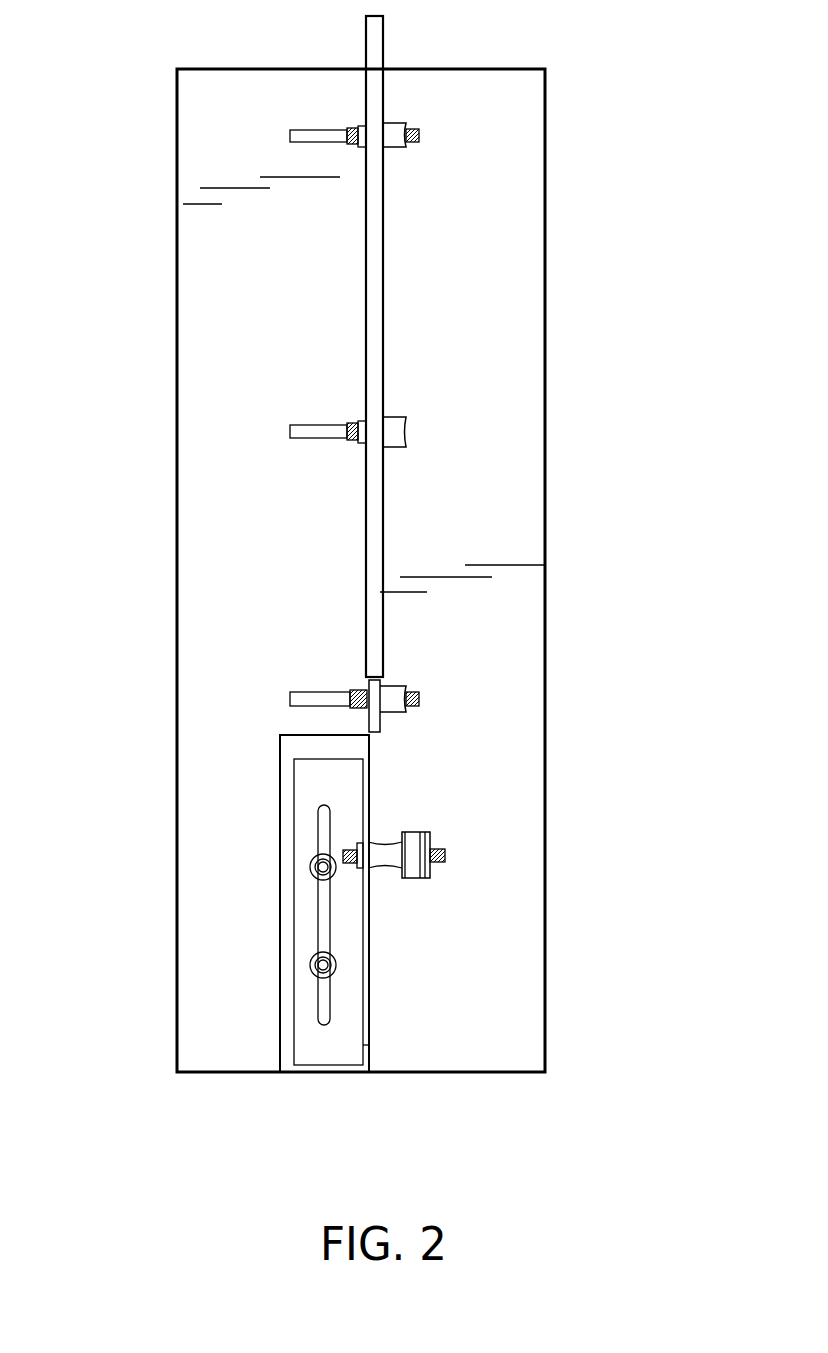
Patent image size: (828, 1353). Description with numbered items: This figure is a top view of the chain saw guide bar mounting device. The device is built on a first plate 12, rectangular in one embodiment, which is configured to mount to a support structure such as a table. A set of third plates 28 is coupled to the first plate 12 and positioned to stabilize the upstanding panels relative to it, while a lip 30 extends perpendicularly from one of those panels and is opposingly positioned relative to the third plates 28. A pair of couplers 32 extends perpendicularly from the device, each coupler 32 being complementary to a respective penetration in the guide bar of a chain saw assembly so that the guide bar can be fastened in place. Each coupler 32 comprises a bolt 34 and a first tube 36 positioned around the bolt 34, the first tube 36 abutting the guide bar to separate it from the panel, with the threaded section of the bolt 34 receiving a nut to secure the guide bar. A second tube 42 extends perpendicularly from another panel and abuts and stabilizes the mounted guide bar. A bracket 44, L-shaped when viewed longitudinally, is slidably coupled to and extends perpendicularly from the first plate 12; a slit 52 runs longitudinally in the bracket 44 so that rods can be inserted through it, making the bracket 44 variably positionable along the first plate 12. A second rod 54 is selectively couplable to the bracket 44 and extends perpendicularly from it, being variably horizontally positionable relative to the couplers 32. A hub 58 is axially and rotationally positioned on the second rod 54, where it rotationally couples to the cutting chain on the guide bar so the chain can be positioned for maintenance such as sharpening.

The first plate 12 is at (207, 119).
The third plates 28 is at (290, 137).
The lip 30 is at (376, 530).
The couplers 32 is at (418, 705).
The bolt 34 is at (529, 160).
The first tube 36 is at (391, 148).
The second tube 42 is at (407, 433).
The bracket 44 is at (315, 1046).
The slit 52 is at (322, 1008).
The second rod 54 is at (387, 865).
The hub 58 is at (513, 895).